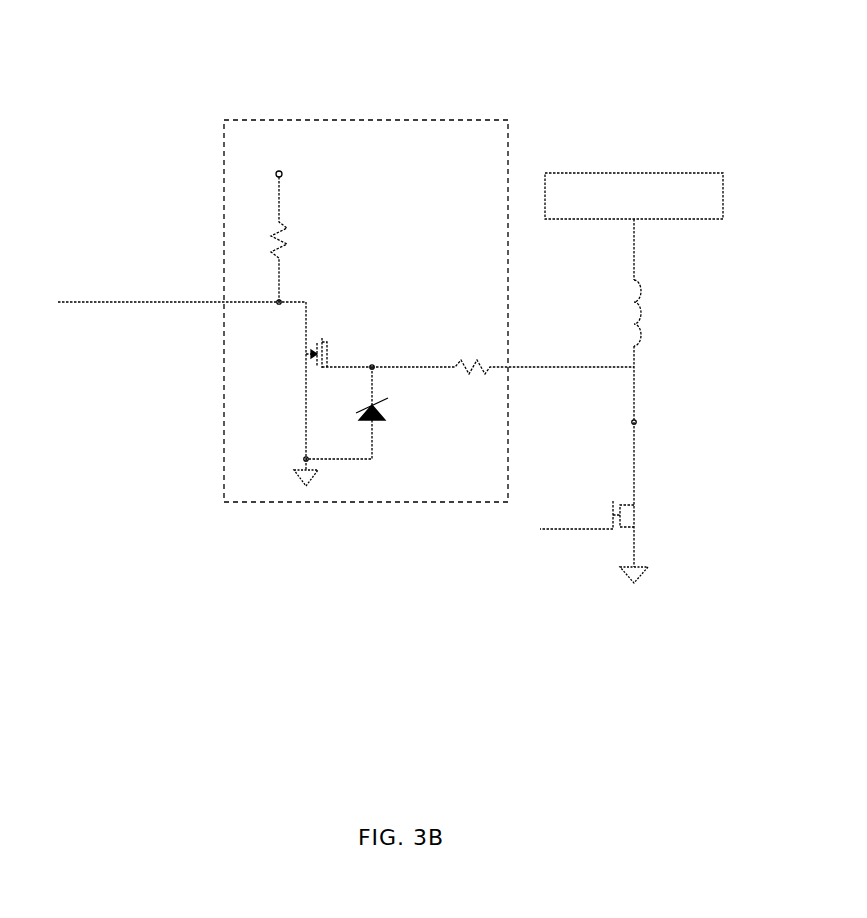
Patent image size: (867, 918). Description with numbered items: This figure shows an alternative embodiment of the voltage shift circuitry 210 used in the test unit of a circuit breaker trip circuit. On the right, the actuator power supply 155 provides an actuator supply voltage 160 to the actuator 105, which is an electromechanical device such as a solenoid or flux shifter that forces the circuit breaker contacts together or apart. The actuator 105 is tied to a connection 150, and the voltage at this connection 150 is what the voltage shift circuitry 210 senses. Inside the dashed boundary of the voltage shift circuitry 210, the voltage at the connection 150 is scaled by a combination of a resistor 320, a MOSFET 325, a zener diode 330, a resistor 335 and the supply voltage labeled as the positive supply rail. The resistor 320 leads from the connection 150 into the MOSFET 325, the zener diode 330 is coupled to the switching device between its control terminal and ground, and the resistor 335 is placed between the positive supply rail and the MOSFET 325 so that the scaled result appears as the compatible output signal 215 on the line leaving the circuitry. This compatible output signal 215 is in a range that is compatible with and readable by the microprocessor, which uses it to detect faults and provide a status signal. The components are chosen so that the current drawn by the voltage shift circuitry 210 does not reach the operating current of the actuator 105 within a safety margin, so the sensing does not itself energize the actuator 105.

The voltage shift circuitry 210 is at (378, 118).
The compatible output signal 215 is at (165, 300).
The resistor 335 is at (293, 232).
The MOSFET 325 is at (327, 343).
The resistor 320 is at (472, 366).
The zener diode 330 is at (375, 420).
The actuator power supply 155 is at (723, 190).
The actuator supply voltage 160 is at (634, 222).
The actuator 105 is at (637, 312).
The connection 150 is at (638, 350).